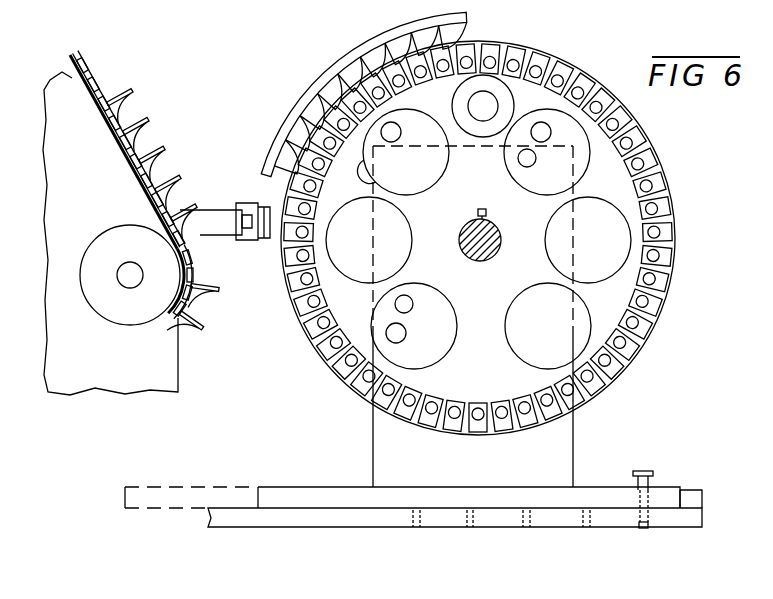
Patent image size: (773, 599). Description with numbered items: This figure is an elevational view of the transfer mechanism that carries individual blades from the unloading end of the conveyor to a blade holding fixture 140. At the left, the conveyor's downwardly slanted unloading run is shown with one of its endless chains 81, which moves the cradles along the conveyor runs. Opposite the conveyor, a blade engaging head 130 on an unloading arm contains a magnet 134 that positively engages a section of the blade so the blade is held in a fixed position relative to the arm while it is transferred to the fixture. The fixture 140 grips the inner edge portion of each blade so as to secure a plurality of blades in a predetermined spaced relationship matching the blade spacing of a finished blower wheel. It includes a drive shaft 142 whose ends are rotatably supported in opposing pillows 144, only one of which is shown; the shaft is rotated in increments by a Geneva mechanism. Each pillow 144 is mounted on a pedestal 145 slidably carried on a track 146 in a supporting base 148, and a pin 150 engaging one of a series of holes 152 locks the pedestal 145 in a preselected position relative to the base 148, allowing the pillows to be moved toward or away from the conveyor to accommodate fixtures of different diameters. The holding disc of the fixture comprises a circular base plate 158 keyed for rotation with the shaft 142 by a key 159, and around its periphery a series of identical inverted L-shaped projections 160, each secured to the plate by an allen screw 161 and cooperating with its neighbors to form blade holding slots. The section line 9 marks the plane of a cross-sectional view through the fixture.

The section line 9- 9 is at (463, 77).
The endless chain 81 is at (597, 1).
The blade engaging head 130 is at (247, 193).
The magnet 134 is at (257, 237).
The blade holding fixture 140 is at (509, 238).
The drive shaft 142 is at (482, 262).
The pillow 144 is at (553, 437).
The pedestal 145 is at (342, 498).
The track 146 is at (688, 498).
The supporting base 148 is at (690, 515).
The pin 150 is at (646, 470).
The holes 152 is at (470, 520).
The circular base plate 158 is at (607, 300).
The key 159 is at (478, 212).
The projection 160 is at (655, 261).
The allen screw 161 is at (670, 248).